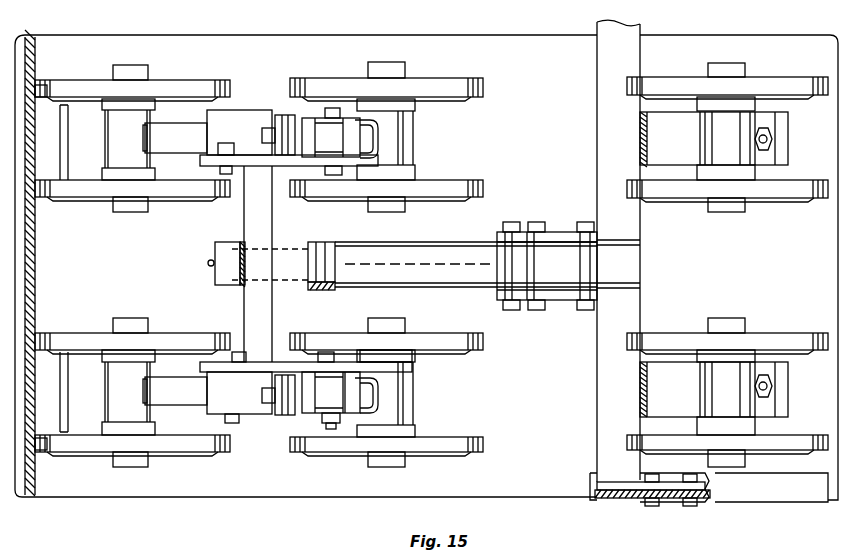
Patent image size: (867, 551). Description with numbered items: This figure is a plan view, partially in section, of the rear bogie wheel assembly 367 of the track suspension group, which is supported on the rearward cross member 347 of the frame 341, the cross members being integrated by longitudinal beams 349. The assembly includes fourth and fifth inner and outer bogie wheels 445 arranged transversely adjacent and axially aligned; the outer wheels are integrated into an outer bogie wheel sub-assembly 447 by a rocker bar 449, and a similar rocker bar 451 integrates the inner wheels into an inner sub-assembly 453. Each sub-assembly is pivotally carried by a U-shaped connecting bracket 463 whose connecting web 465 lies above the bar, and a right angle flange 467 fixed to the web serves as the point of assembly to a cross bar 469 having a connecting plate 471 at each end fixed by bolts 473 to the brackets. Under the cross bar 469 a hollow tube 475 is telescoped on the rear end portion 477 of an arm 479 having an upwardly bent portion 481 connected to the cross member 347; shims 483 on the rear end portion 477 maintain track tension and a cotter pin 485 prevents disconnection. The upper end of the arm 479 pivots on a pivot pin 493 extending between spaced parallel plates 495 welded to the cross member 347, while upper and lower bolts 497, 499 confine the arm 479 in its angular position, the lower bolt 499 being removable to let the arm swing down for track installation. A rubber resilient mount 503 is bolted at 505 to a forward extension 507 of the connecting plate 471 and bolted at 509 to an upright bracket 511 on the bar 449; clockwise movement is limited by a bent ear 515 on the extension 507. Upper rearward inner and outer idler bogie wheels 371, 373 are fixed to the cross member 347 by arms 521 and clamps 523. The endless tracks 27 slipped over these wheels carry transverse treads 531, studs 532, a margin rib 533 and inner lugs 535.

The endless track 27 is at (38, 302).
The frame 341 is at (720, 508).
The rearward cross member 347 is at (608, 183).
The longitudinal beam 349 is at (748, 490).
The rear bogie wheel assembly 367 is at (148, 273).
The upper rearward inner idler bogie wheel 371 is at (814, 210).
The upper rearward outer idler bogie wheel 373 is at (813, 331).
The bogie wheel 445 is at (203, 80).
The outer bogie wheel sub-assembly 447 is at (276, 456).
The rocker bar 449 is at (168, 392).
The rocker bar 451 is at (182, 133).
The inner bogie wheel sub-assembly 453 is at (287, 74).
The U-shaped connecting bracket 463 is at (240, 110).
The connecting web 465 is at (232, 408).
The right angle flange 467 is at (205, 157).
The cross bar 469 is at (256, 226).
The connecting plate 471 is at (282, 168).
The bolt 473 is at (256, 366).
The hollow tube 475 is at (225, 278).
The rear end portion 477 is at (212, 250).
The arm 479 is at (422, 262).
The upwardly bent portion 481 is at (466, 250).
The shim 483 is at (320, 292).
The cotter pin 485 is at (208, 266).
The pivot pin 493 is at (584, 230).
The spaced parallel plate 495 is at (630, 290).
The upper bolt 497 is at (511, 310).
The lower bolt 499 is at (537, 311).
The resilient mount 503 is at (345, 128).
The bolt 505 is at (332, 356).
The forward extension 507 is at (398, 366).
The bolt 509 is at (333, 430).
The upright bracket 511 is at (350, 414).
The bent ear 515 is at (372, 150).
The arm 521 is at (660, 143).
The clamp 523 is at (716, 150).
The transverse tread 531 is at (36, 243).
The stud 532 is at (32, 86).
The margin rib 533 is at (18, 40).
The lug 535 is at (60, 136).